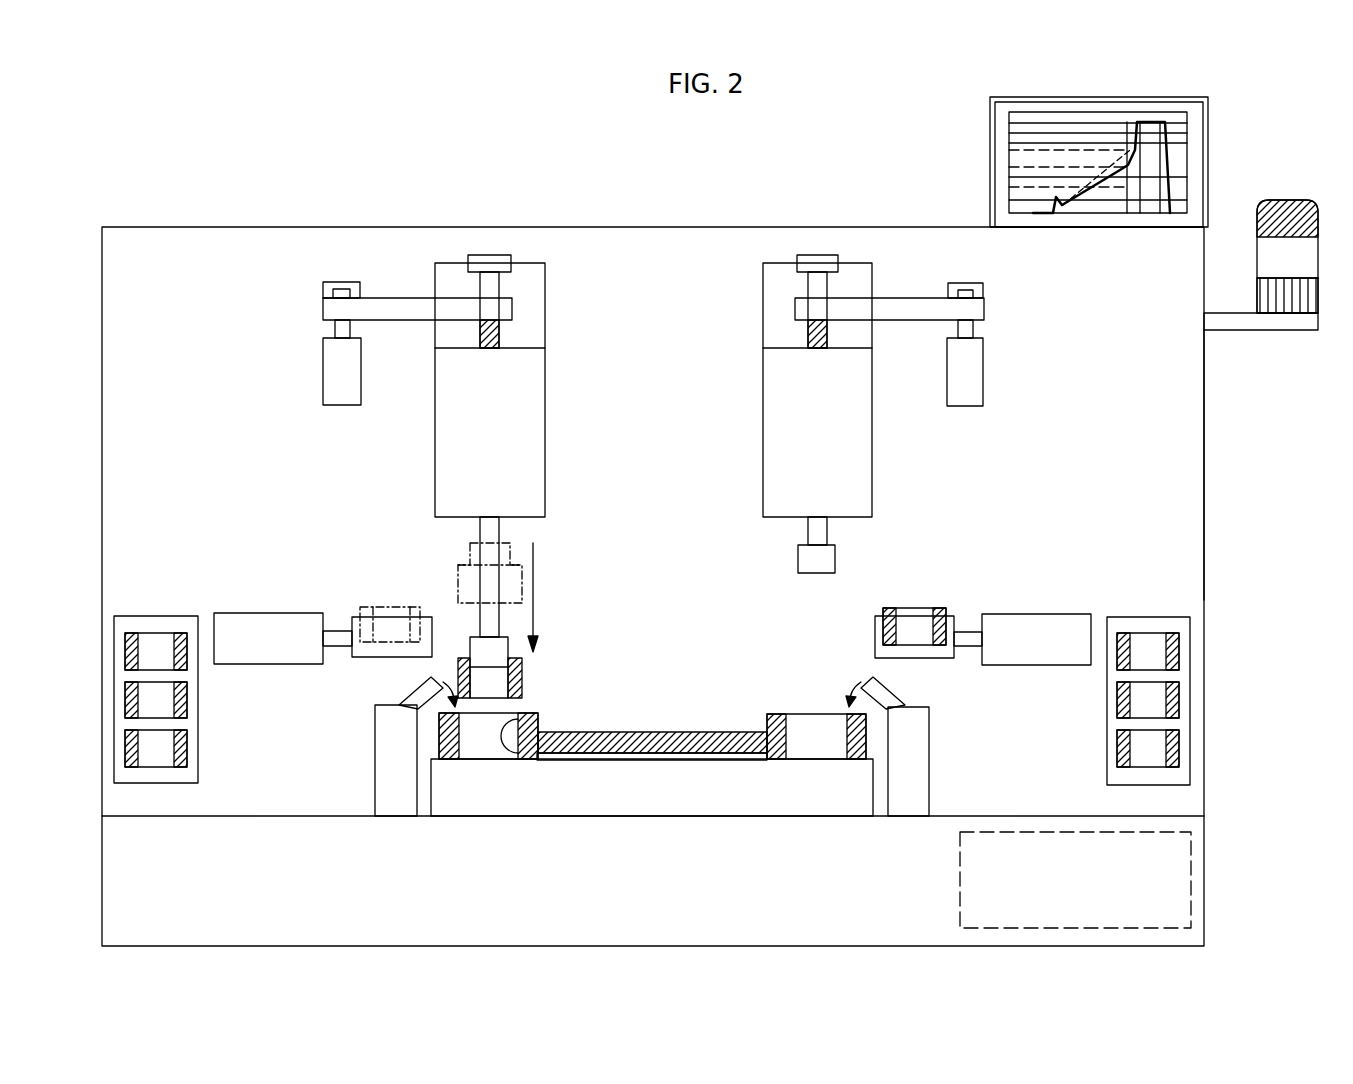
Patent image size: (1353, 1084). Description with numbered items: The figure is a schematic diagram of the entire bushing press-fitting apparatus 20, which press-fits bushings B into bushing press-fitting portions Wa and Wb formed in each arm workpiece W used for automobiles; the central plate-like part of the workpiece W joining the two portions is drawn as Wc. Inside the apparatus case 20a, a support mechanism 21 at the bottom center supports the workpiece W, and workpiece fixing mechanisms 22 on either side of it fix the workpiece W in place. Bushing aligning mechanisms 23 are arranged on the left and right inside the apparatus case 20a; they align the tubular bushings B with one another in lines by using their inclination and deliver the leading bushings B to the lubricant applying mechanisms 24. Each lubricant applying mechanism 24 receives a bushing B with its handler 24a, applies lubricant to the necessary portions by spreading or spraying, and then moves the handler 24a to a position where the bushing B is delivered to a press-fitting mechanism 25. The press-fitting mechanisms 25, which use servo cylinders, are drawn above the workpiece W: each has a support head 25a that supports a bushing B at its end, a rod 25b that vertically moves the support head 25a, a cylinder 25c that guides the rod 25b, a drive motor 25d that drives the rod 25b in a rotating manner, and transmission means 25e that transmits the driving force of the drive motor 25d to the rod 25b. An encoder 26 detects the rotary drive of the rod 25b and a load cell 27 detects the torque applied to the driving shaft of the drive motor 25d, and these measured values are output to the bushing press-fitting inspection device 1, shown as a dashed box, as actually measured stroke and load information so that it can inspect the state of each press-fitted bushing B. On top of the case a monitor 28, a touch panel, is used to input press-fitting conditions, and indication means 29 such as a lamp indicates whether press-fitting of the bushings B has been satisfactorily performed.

The bushing press-fitting inspection device 1 is at (952, 881).
The bushing press-fitting apparatus 20 is at (659, 213).
The apparatus case 20a is at (1212, 421).
The support mechanism 21 is at (672, 795).
The workpiece fixing mechanism 22 is at (383, 766).
The bushing aligning mechanism 23 is at (161, 604).
The lubricant applying mechanism 24 is at (269, 604).
The handler 24a is at (383, 657).
The press-fitting mechanism 25 is at (558, 322).
The support head 25a is at (832, 556).
The rod 25b is at (812, 531).
The cylinder 25c is at (778, 428).
The drive motor 25d is at (975, 380).
The transmission means 25e is at (908, 308).
The encoder 26 is at (815, 263).
The load cell 27 is at (983, 292).
The monitor 28 is at (1214, 122).
The indication means 29 is at (1291, 195).
The bushing B is at (187, 702).
The workpiece W is at (645, 716).
The bushing press-fitting portion Wa is at (530, 713).
The bushing press-fitting portion Wb is at (787, 725).
The plate portion Wc is at (690, 732).